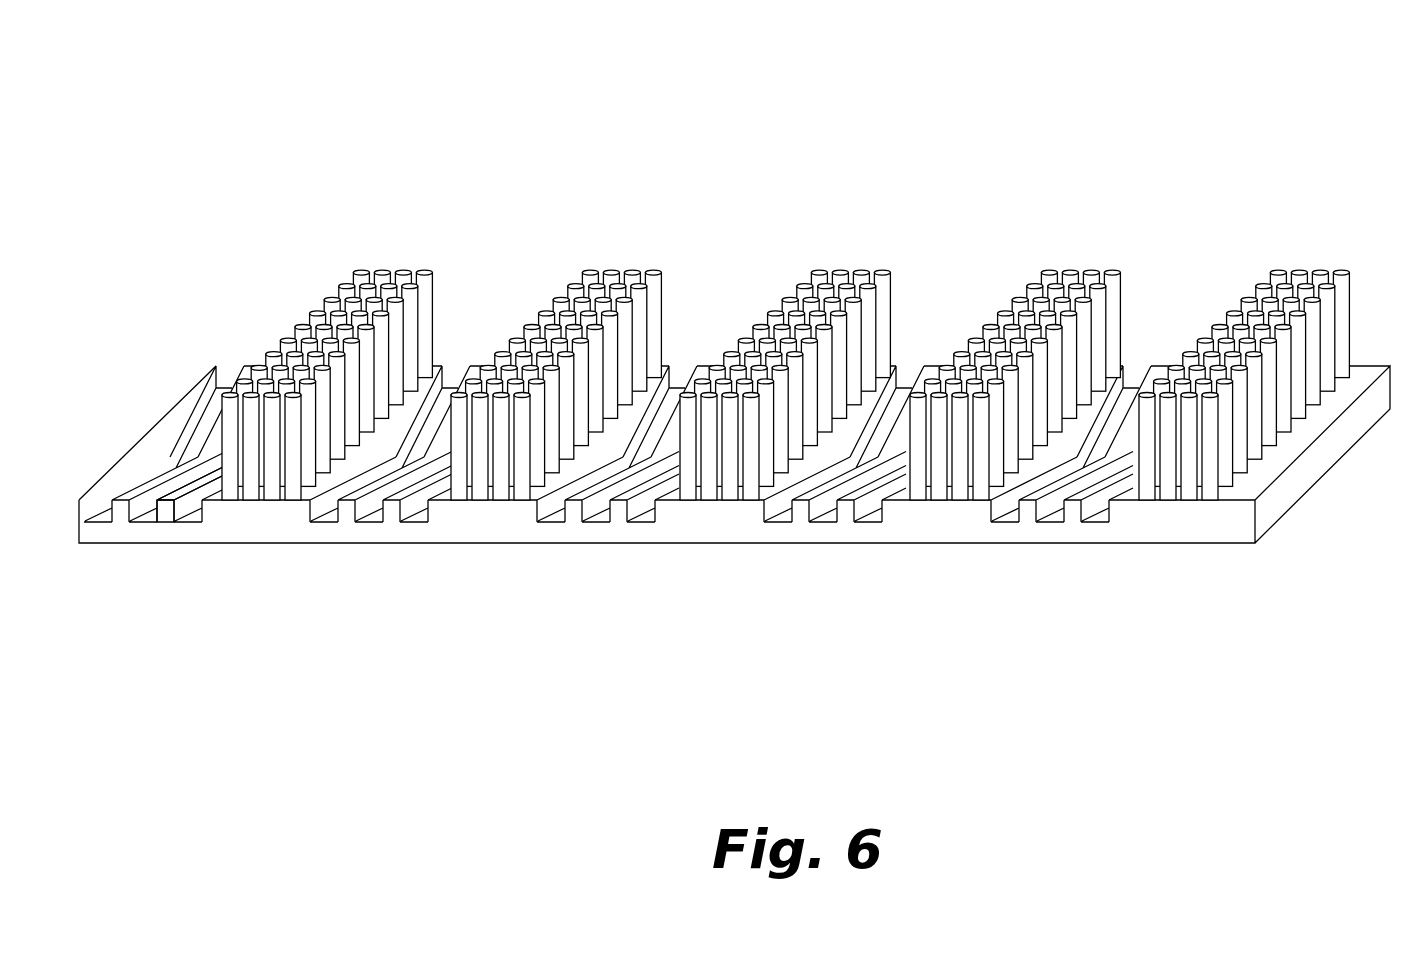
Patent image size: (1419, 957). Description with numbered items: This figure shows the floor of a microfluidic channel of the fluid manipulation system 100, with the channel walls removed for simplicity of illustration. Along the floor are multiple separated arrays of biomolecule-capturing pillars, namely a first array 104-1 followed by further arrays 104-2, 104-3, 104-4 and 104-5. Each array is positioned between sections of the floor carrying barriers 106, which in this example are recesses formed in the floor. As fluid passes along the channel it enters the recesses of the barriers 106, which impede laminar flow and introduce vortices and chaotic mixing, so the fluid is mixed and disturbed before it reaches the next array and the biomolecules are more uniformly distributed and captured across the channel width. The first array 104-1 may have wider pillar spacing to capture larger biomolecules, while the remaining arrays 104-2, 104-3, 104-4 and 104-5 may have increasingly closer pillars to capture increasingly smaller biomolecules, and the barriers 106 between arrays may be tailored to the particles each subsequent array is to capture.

The fluid manipulation system 100 is at (370, 111).
The first array 104-1 is at (354, 230).
The array 104-2 is at (603, 229).
The array 104-3 is at (820, 229).
The array 104-4 is at (1040, 229).
The array 104-5 is at (1298, 229).
The barriers 106 is at (162, 507).